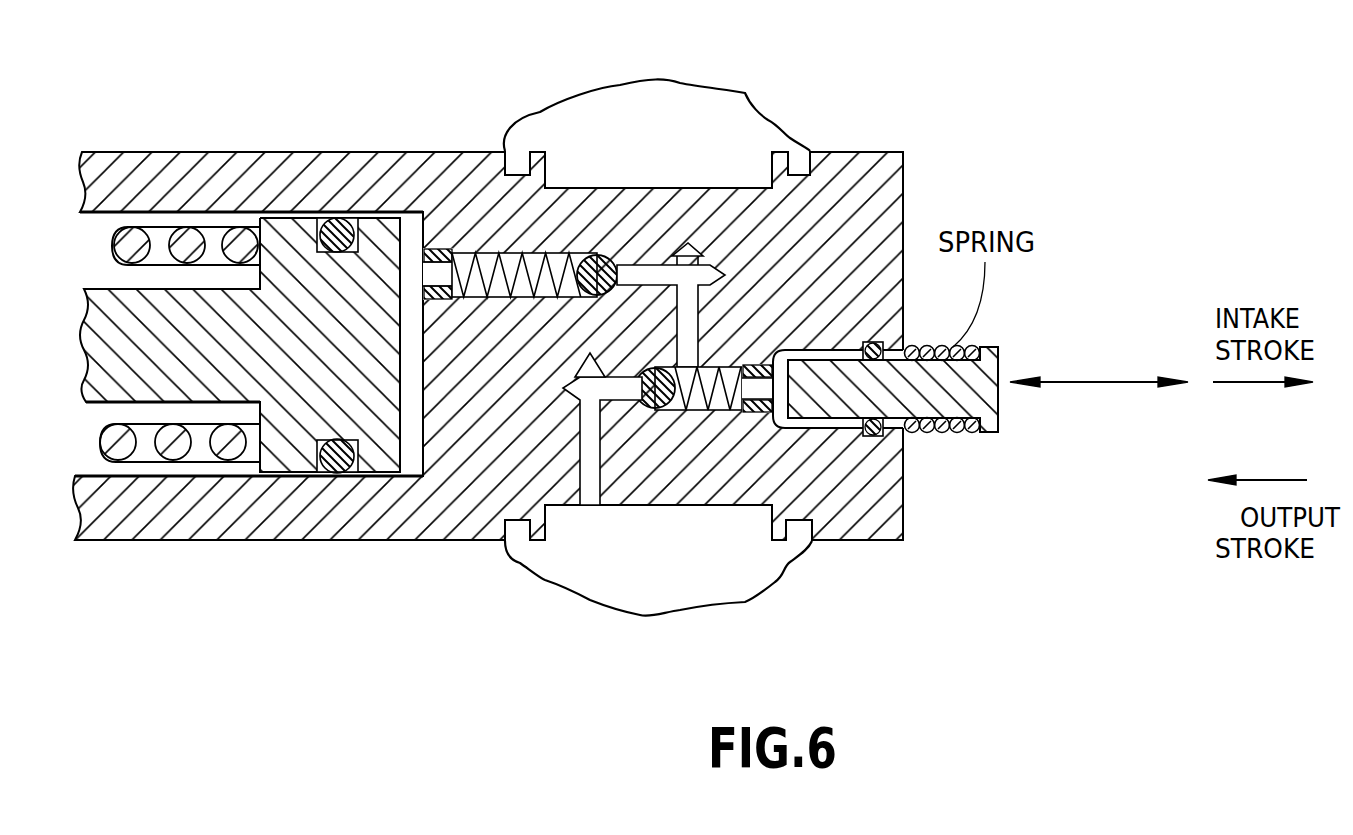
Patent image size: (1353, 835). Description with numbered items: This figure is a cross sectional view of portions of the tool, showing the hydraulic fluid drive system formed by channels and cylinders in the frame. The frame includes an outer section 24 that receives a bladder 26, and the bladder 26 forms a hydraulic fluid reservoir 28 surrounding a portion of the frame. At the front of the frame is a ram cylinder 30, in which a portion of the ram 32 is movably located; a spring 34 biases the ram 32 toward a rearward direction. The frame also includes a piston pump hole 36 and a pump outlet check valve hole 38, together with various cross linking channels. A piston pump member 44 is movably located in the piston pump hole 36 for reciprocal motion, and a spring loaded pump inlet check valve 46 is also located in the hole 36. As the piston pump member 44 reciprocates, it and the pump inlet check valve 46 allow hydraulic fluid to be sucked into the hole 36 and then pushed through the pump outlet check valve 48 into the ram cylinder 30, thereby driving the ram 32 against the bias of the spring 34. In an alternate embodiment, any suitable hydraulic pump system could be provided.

The outer section 24 is at (803, 165).
The bladder 26 is at (632, 88).
The hydraulic fluid reservoir 28 is at (680, 108).
The ram cylinder 30 is at (133, 212).
The ram 32 is at (92, 318).
The spring 34 is at (105, 445).
The piston pump hole 36 is at (825, 355).
The pump outlet check valve hole 38 is at (498, 262).
The piston pump member 44 is at (985, 345).
The pump inlet check valve 46 is at (690, 412).
The pump outlet check valve 48 is at (597, 267).